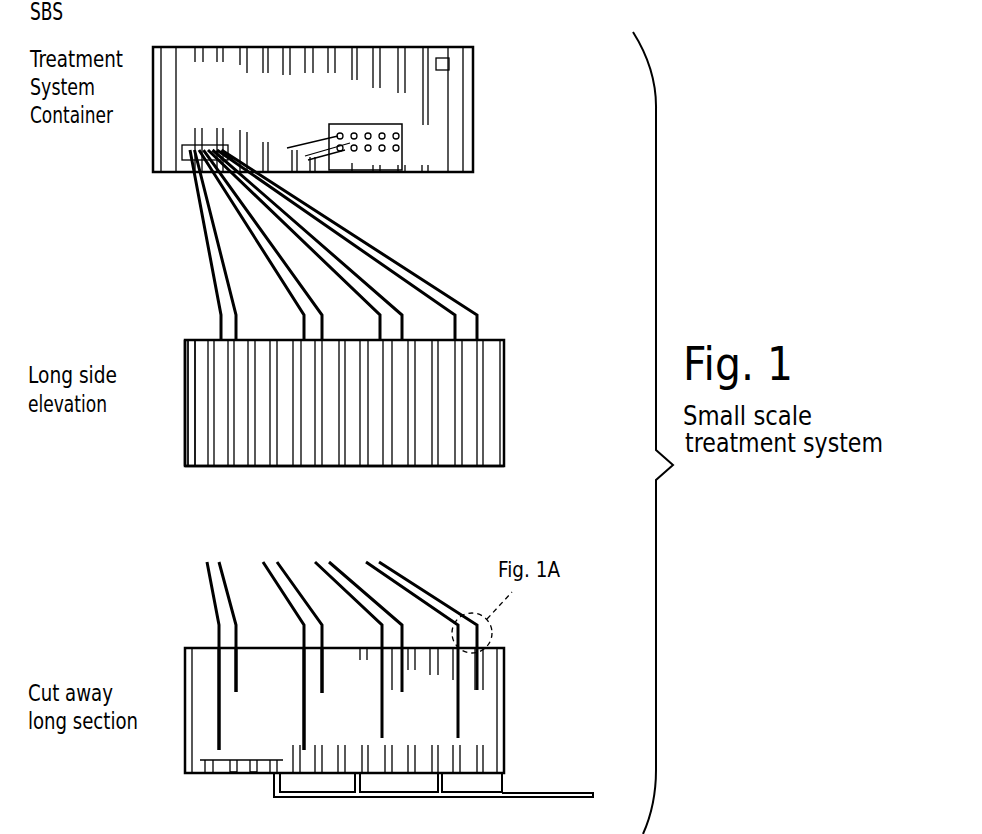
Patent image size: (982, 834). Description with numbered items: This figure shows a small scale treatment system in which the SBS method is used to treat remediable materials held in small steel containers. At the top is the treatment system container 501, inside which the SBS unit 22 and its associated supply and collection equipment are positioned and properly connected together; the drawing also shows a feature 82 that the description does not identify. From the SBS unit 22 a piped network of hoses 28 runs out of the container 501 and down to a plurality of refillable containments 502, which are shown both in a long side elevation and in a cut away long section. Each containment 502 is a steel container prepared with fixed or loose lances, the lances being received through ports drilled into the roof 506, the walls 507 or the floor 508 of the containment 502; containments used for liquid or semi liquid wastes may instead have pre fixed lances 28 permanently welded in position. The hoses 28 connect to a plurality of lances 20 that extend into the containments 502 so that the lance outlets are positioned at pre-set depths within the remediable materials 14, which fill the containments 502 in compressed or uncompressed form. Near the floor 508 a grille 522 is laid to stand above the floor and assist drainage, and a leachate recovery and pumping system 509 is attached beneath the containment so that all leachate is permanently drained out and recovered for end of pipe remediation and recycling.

The container 501 is at (335, 109).
The SBS unit 22 is at (344, 132).
The manifold outlet holes 82 is at (375, 141).
The roof 506 is at (199, 242).
The hoses 28 is at (338, 450).
The refillable containment 502 is at (370, 556).
The walls 507 is at (166, 403).
The floor 508 is at (344, 486).
The lance 20 is at (235, 699).
The remediable materials 14 is at (329, 699).
The grille 522 is at (241, 751).
The leachate recovery and pumping system 509 is at (456, 792).